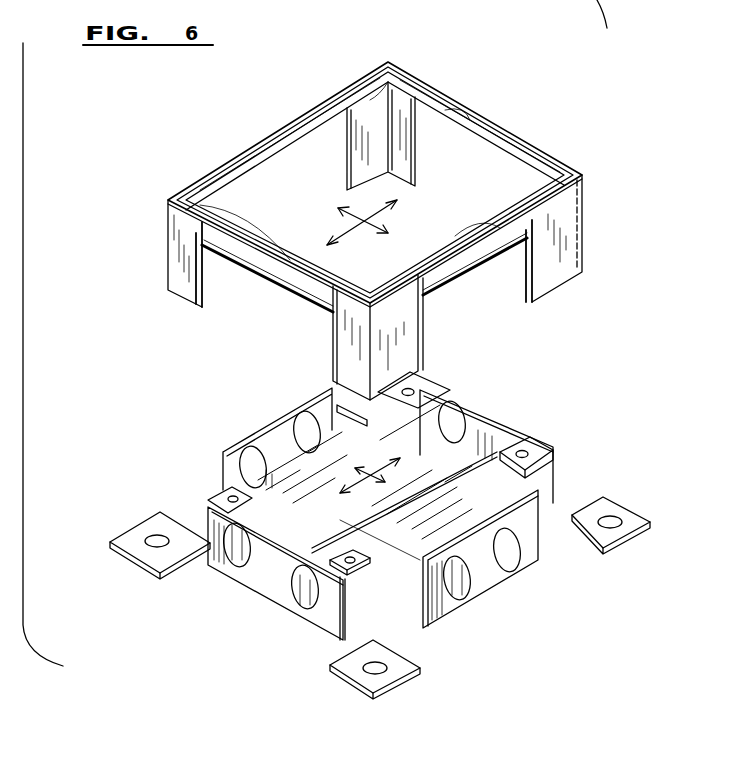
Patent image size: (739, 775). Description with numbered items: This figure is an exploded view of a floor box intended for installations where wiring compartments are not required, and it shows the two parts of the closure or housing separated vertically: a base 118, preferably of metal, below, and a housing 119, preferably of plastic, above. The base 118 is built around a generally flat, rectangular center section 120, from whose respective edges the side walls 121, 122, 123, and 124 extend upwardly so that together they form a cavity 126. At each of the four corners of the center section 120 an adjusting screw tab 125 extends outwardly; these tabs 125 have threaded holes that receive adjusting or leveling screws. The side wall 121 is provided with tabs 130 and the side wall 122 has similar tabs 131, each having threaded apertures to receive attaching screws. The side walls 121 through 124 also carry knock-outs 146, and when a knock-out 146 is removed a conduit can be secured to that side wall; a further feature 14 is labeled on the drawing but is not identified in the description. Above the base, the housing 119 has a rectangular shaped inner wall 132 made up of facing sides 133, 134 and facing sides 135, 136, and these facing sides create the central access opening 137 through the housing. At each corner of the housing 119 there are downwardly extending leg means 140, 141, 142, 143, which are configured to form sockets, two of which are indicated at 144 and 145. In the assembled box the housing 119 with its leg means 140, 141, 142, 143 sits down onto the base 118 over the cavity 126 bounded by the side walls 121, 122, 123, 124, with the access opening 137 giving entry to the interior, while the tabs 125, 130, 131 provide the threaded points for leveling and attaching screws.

The housing 119 is at (137, 141).
The base 118 is at (132, 450).
The facing side 133 is at (283, 150).
The leg means 143 is at (395, 108).
The inner wall 132 is at (410, 130).
The facing side 136 is at (493, 150).
The leg means 142 is at (587, 222).
The leg means 140 is at (166, 222).
The socket 144 is at (193, 300).
The facing side 135 is at (247, 263).
The leg means 141 is at (370, 343).
The central access opening 137 is at (350, 222).
The facing side 134 is at (477, 257).
The socket 145 is at (520, 290).
The tabs 131 is at (420, 370).
The side wall 122 is at (483, 430).
The side wall 123 is at (282, 445).
The knock-outs 146 is at (250, 450).
The tabs 130 is at (240, 497).
The cavity 126 is at (372, 478).
The center section 120 is at (433, 558).
The adjusting screw tabs 125 is at (110, 542).
The side wall 121 is at (267, 577).
The side wall 124 is at (483, 573).
The wall opening 14 is at (477, 583).